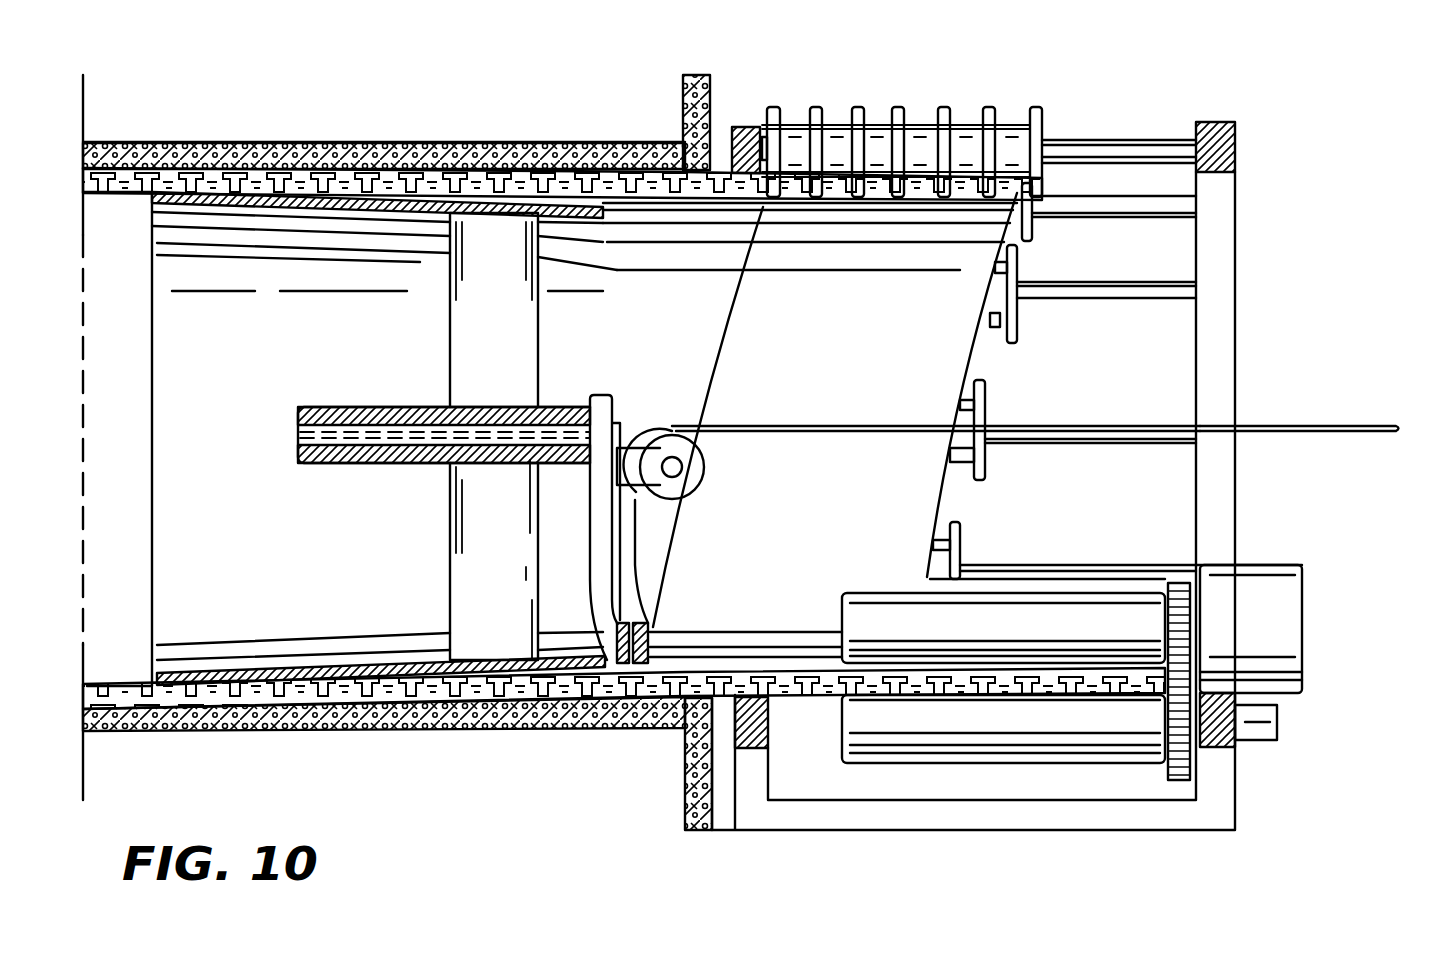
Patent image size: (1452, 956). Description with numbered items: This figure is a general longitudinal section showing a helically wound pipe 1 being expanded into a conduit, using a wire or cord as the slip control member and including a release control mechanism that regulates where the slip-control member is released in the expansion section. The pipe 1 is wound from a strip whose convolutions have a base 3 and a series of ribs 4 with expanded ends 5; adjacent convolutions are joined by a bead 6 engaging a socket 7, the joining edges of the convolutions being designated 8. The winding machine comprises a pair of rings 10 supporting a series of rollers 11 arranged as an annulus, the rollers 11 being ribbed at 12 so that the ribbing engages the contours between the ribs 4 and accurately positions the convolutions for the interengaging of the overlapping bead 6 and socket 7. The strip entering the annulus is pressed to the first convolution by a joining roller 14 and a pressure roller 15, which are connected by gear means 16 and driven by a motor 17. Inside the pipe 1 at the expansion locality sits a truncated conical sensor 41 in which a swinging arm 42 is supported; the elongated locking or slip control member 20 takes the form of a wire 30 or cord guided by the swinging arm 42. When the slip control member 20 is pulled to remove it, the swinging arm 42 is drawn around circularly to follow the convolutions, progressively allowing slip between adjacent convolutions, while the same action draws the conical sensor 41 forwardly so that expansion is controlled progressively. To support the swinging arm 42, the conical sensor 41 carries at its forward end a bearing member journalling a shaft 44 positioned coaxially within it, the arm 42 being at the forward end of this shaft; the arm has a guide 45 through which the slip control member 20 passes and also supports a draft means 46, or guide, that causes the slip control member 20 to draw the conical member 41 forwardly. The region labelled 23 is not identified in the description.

The pipe 1 is at (130, 467).
The base 3 is at (433, 690).
The ribs 4 is at (471, 690).
The expanded ends 5 is at (485, 690).
The bead 6 is at (626, 690).
The socket 7 is at (650, 690).
The joining edges 8 is at (612, 700).
The rings 10 is at (748, 125).
The rollers 11 is at (877, 140).
The ribbing 12 is at (853, 108).
The joining roller 14 is at (985, 752).
The pressure roller 15 is at (1077, 613).
The gear means 16 is at (1178, 782).
The motor 17 is at (1252, 583).
The slip control member 20 is at (792, 416).
The concrete slab 23 is at (464, 168).
The wire 30 is at (1277, 425).
The truncated conical sensor 41 is at (262, 206).
The swinging arm 42 is at (598, 541).
The shaft 44 is at (402, 407).
The guide 45 is at (652, 640).
The draft means 46 is at (712, 480).